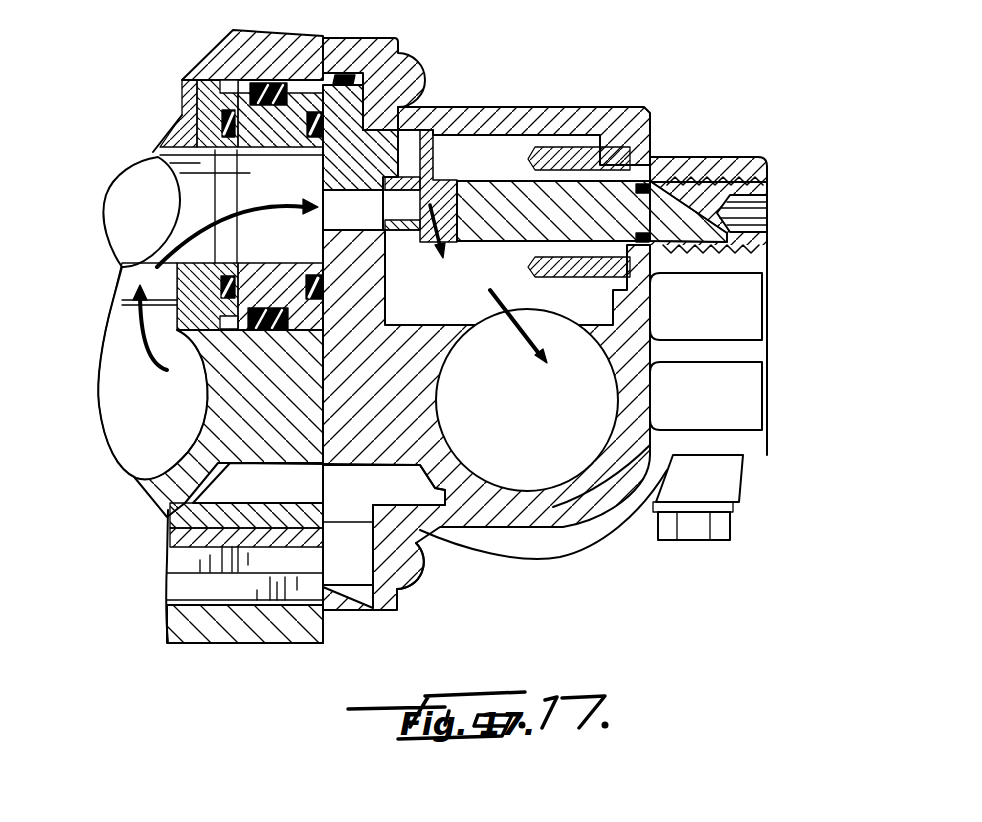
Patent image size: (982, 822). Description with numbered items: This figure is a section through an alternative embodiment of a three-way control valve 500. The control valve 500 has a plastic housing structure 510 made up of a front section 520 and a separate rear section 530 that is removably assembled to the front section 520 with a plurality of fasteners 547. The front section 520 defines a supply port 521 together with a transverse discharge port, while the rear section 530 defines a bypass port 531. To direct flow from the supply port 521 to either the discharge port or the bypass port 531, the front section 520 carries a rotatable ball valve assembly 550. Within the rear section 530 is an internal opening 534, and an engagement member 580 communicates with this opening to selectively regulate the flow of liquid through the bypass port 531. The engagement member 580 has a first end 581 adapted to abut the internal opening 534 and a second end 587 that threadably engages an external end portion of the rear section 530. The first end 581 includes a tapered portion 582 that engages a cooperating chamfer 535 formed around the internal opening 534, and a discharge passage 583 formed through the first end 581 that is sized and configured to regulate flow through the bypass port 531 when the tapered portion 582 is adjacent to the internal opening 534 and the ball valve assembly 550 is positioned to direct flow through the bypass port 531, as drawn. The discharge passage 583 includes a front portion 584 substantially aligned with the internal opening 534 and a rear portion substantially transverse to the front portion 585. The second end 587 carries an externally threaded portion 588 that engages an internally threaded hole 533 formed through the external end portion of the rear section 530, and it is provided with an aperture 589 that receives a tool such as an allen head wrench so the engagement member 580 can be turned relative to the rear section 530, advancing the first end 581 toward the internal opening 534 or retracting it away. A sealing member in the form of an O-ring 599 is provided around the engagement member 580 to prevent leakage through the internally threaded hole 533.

The three-way control valve 500 is at (165, 72).
The housing structure 510 is at (372, 625).
The front section 520 is at (167, 510).
The supply port 521 is at (140, 478).
The rear section 530 is at (490, 508).
The bypass port 531 is at (572, 490).
The internally threaded hole 533 is at (672, 190).
The internal opening 534 is at (338, 196).
The chamfer 535 is at (413, 180).
The fasteners 547 is at (410, 63).
The rotatable ball valve assembly 550 is at (142, 182).
The engagement member 580 is at (563, 190).
The first end 581 is at (482, 250).
The tapered portion 582 is at (408, 255).
The discharge passage 583 is at (465, 247).
The front portion 584 is at (452, 200).
The front portion 585 is at (446, 200).
The second end 587 is at (763, 182).
The externally threaded portion 588 is at (720, 248).
The aperture 589 is at (750, 230).
The O-ring 599 is at (642, 184).